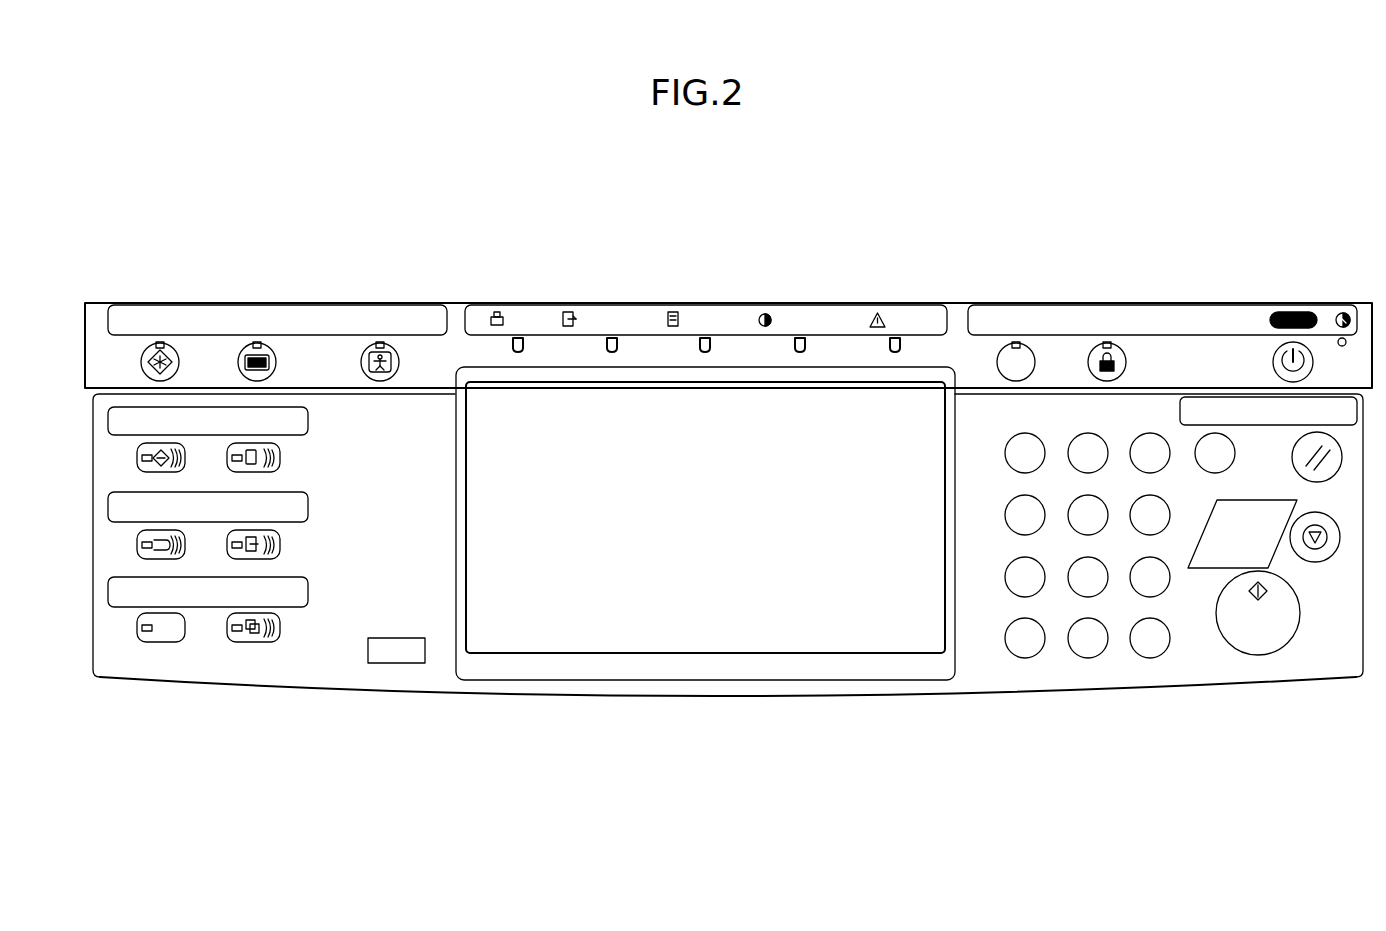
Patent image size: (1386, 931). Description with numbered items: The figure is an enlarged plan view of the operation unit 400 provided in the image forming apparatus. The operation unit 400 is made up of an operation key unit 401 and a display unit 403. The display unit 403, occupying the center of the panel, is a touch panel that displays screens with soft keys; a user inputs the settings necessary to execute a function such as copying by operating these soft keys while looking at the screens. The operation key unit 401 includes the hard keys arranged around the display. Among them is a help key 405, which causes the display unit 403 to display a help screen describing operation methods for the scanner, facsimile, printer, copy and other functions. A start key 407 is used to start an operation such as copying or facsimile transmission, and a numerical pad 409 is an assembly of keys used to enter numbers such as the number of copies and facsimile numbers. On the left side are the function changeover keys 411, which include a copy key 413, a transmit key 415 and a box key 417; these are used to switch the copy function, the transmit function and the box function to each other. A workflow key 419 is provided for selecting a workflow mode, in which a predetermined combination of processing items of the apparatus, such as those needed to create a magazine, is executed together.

The operation unit 400 is at (980, 212).
The operation key unit 401 is at (1331, 650).
The display unit 403 is at (603, 620).
The help key 405 is at (1035, 362).
The start key 407 is at (1252, 642).
The numerical pad 409 is at (995, 660).
The function changeover keys 411 is at (315, 640).
The copy key 413 is at (297, 424).
The transmit key 415 is at (298, 508).
The box key 417 is at (300, 579).
The workflow key 419 is at (392, 655).